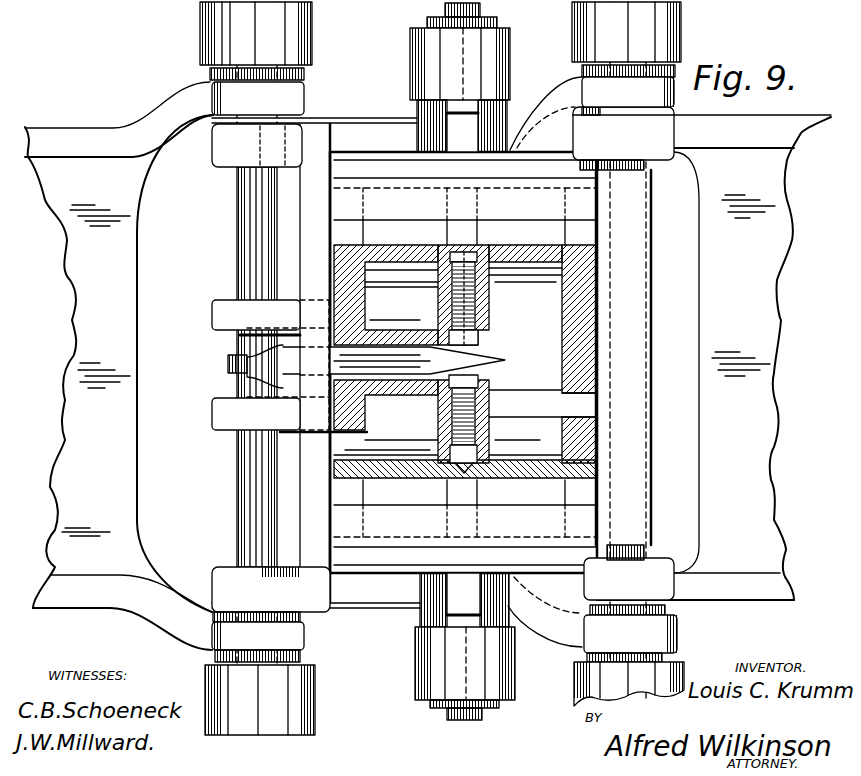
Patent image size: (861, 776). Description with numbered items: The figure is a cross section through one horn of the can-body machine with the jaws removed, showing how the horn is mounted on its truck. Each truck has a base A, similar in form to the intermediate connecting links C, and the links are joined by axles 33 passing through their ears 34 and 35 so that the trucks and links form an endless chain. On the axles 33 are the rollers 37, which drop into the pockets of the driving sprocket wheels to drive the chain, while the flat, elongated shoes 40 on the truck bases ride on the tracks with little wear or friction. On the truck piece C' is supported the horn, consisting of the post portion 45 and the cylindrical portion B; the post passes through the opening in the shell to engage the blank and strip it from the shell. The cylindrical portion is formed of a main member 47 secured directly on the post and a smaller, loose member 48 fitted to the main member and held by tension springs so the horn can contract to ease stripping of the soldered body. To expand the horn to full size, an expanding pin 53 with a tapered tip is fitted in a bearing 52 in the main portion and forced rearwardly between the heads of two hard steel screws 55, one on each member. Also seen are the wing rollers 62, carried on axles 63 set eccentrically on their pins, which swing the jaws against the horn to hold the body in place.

The axle 33 is at (247, 222).
The ear 34 is at (214, 168).
The ear 35 is at (306, 98).
The roller 37 is at (212, 33).
The shoe 40 is at (359, 118).
The post portion 45 is at (290, 410).
The main member 47 is at (581, 338).
The loose member 48 is at (581, 451).
The bearing 52 is at (397, 323).
The expanding pin 53 is at (506, 359).
The hard steel screw 55 is at (487, 315).
The wing roller 62 is at (494, 42).
The axle 63 is at (469, 720).
The truck base A is at (636, 307).
The cylindrical portion of the horn B is at (596, 373).
The connecting link C is at (428, 366).
The truck piece C' is at (545, 351).